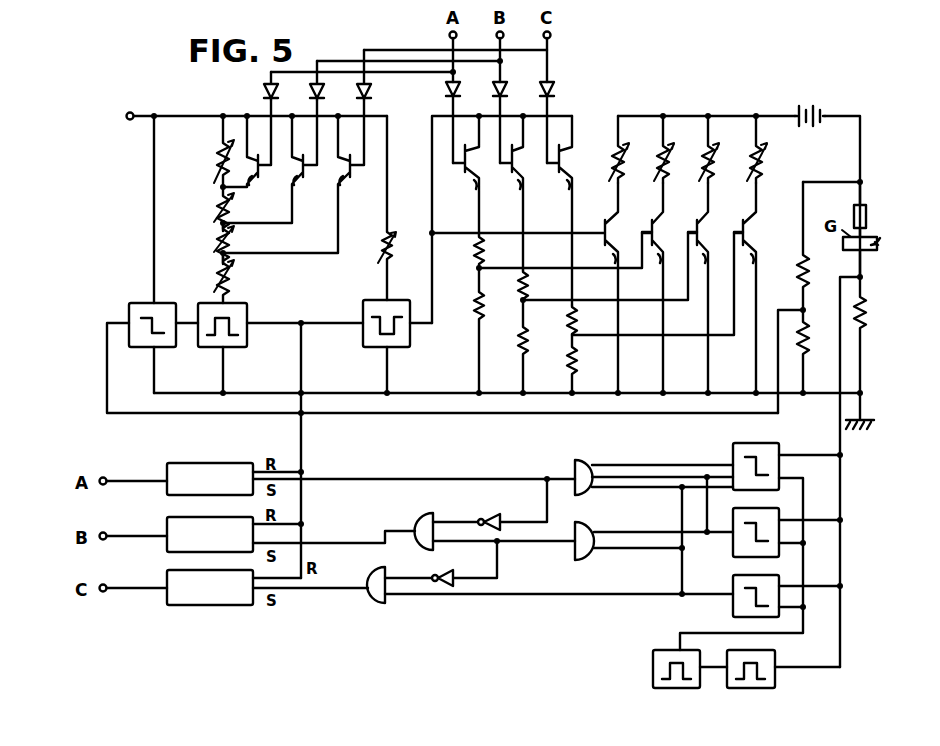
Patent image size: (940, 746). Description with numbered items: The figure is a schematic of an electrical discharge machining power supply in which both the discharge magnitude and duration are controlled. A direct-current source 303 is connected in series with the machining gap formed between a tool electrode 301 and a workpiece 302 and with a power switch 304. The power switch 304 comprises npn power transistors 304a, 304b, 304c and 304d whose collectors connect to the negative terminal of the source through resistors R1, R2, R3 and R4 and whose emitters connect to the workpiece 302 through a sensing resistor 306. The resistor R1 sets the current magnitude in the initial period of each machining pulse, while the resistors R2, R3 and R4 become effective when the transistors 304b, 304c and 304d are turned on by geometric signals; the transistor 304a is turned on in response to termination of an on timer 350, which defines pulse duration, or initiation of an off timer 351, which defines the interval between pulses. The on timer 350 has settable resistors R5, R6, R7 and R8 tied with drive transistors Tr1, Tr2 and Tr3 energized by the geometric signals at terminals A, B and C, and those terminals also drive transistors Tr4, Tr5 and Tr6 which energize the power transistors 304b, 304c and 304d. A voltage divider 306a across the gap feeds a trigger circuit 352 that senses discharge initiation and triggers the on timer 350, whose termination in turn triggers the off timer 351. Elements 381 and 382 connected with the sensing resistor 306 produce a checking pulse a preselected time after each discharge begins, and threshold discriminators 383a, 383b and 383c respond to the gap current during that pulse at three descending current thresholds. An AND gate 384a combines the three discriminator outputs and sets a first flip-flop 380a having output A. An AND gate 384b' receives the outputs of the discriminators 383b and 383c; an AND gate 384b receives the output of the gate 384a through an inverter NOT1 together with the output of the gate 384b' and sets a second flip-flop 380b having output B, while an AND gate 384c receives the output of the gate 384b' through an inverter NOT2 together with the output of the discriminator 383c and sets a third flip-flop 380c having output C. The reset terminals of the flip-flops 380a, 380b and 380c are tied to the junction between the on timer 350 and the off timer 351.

The tool electrode 301 is at (868, 215).
The workpiece 302 is at (881, 257).
The direct-current source 303 is at (814, 104).
The power switch 304 is at (646, 237).
The power transistor 304a is at (600, 222).
The power transistor 304b is at (652, 222).
The power transistor 304c is at (700, 222).
The power transistor 304d is at (750, 228).
The sensing resistor 306 is at (881, 335).
The voltage divider 306a is at (806, 352).
The on timer 350 is at (243, 347).
The off timer 351 is at (360, 347).
The trigger circuit 352 is at (168, 347).
The first flip-flop 380a is at (341, 468).
The second flip-flop 380b is at (261, 524).
The third flip-flop 380c is at (237, 601).
The checking pulse element 381 is at (768, 650).
The checking pulse element 382 is at (653, 669).
The first threshold discriminator 383a is at (781, 443).
The second threshold discriminator 383b is at (782, 514).
The third threshold discriminator 383c is at (731, 604).
The AND gate 384a is at (650, 515).
The AND gate 384b is at (483, 520).
The AND gate 384b' is at (650, 558).
The AND gate 384c is at (548, 599).
The resistor R1 is at (609, 149).
The resistor R2 is at (655, 149).
The resistor R3 is at (700, 149).
The resistor R4 is at (748, 149).
The resistor R5 is at (208, 151).
The resistor R6 is at (208, 209).
The resistor R7 is at (208, 243).
The resistor R8 is at (208, 278).
The drive transistor Tr1 is at (250, 154).
The drive transistor Tr2 is at (273, 161).
The drive transistor Tr3 is at (296, 176).
The drive transistor Tr4 is at (459, 175).
The drive transistor Tr5 is at (505, 193).
The drive transistor Tr6 is at (552, 210).
The inverter NOT1 is at (508, 504).
The inverter NOT2 is at (441, 563).